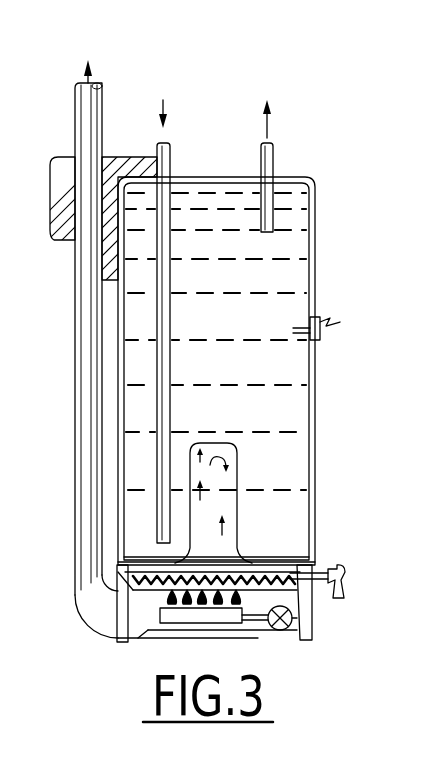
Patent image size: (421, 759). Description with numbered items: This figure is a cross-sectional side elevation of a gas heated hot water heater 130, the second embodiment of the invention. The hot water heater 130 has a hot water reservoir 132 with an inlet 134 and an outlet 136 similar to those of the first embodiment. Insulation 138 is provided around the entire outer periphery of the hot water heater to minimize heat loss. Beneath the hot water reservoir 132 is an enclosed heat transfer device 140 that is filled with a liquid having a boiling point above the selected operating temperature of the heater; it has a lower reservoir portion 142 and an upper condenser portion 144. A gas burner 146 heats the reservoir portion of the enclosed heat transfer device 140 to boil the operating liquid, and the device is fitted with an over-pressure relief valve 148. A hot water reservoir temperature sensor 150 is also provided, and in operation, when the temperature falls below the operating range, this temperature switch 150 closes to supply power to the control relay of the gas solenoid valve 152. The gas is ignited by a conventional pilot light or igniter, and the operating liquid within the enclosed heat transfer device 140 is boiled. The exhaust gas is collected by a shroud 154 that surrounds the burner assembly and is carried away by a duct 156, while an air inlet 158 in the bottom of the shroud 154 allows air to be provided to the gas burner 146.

The hot water heater 130 is at (318, 172).
The hot water reservoir 132 is at (314, 268).
The inlet 134 is at (170, 146).
The outlet 136 is at (274, 145).
The insulation 138 is at (73, 155).
The heat transfer device 140 is at (297, 492).
The lower reservoir portion 142 is at (268, 565).
The upper condenser portion 144 is at (238, 445).
The gas burner 146 is at (235, 632).
The over-pressure relief valve 148 is at (340, 570).
The hot water reservoir temperature sensor 150 is at (322, 320).
The gas solenoid valve 152 is at (294, 620).
The shroud 154 is at (137, 602).
The duct 156 is at (77, 434).
The air inlet 158 is at (150, 633).